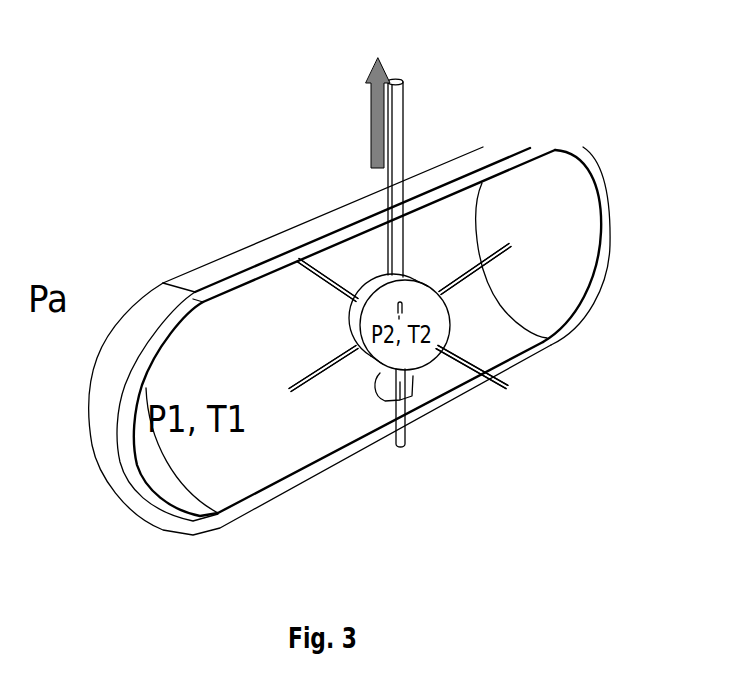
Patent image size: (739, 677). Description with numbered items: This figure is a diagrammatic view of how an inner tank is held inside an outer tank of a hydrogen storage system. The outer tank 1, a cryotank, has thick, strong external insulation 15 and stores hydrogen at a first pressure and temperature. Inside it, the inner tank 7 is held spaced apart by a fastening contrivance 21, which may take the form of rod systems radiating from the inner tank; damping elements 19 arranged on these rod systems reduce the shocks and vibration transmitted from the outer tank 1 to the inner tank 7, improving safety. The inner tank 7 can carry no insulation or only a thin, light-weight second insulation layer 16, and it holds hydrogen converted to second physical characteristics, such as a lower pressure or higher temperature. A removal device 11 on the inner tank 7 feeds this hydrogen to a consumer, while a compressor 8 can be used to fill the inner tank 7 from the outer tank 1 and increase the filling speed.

The outer tank 1 is at (350, 341).
The thick insulation 15 is at (257, 255).
The inner tank 7 is at (438, 287).
The light insulation 16 is at (418, 358).
The compressor 8 is at (386, 400).
The removal device 11 is at (338, 77).
The damping elements 19 is at (338, 284).
The fastening contrivance 21 is at (340, 368).